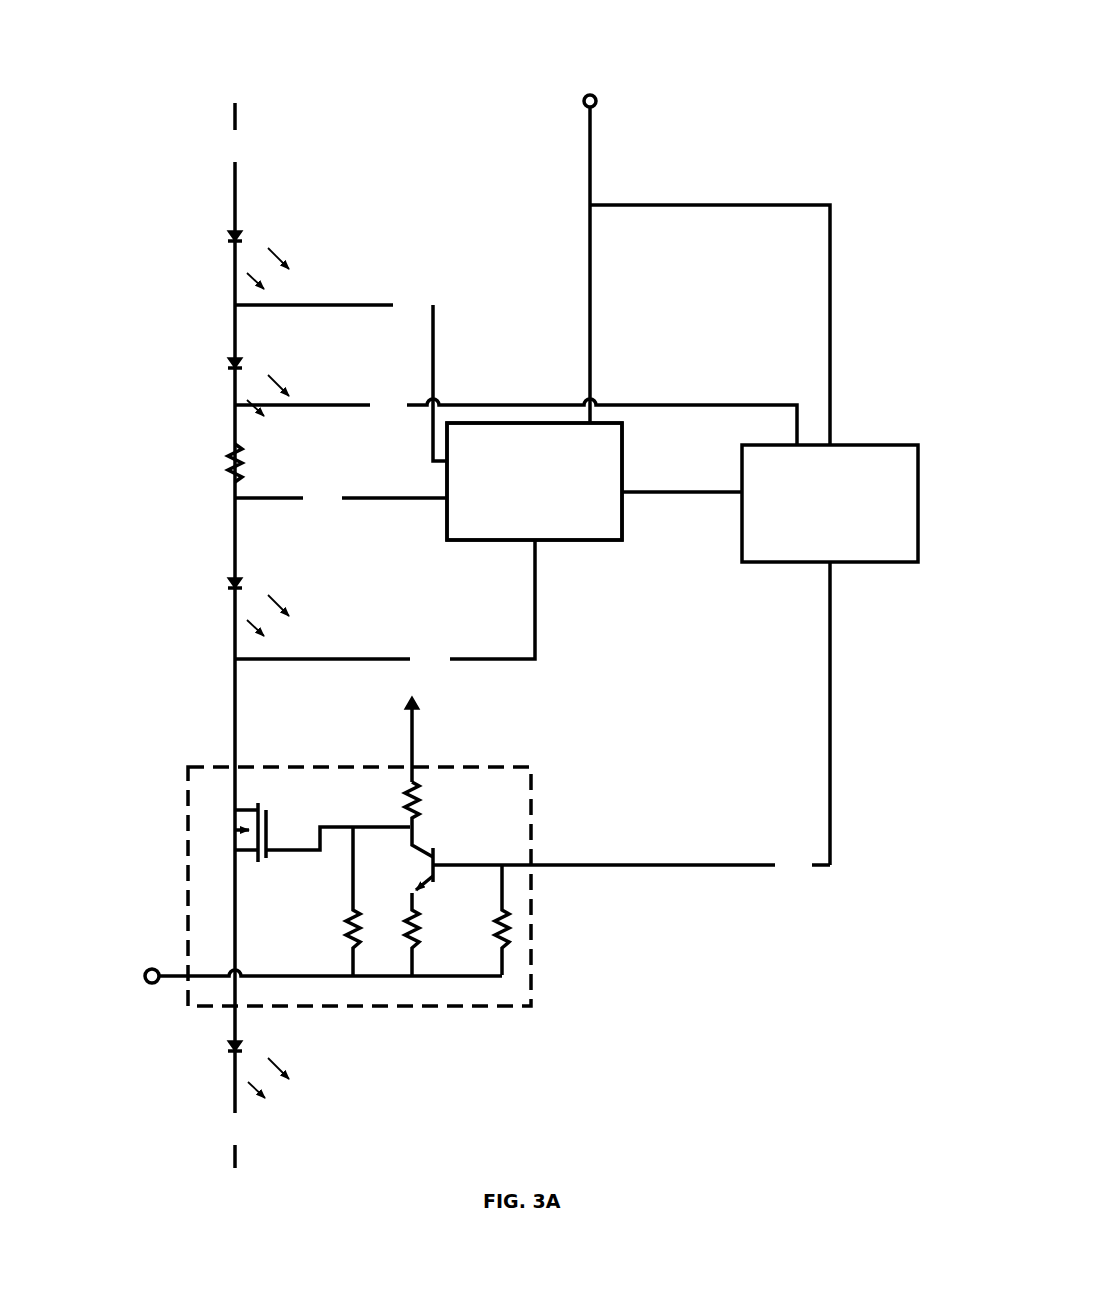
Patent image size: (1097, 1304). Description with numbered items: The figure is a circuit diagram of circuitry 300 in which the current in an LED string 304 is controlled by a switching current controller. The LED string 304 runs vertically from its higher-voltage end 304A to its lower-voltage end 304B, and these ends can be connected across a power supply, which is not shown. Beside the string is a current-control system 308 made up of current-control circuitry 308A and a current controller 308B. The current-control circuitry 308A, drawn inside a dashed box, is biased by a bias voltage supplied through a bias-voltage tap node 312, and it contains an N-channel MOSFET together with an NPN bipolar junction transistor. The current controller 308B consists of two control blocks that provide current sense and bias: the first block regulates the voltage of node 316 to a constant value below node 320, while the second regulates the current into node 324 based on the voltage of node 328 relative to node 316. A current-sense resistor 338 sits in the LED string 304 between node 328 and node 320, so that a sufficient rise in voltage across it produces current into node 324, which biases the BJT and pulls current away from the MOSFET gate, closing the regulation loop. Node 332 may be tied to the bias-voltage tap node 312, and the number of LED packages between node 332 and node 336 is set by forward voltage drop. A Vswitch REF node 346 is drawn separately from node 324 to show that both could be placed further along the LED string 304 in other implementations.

The circuitry 300 is at (797, 125).
The LED string 304 is at (200, 183).
The higher-voltage end 304A is at (234, 131).
The lower-voltage end 304B is at (234, 1145).
The current-control system 308 is at (858, 419).
The current-control circuitry 308A is at (222, 763).
The current controller 308B is at (856, 597).
The bias-voltage tap node 312 is at (594, 96).
The node 316 is at (680, 495).
The node 320 is at (341, 498).
The node 324 is at (631, 865).
The node 328 is at (516, 419).
The node 332 is at (341, 377).
The node 336 is at (385, 605).
The current-sense resistor 338 is at (228, 457).
The Vswitch REF node 346 is at (152, 968).